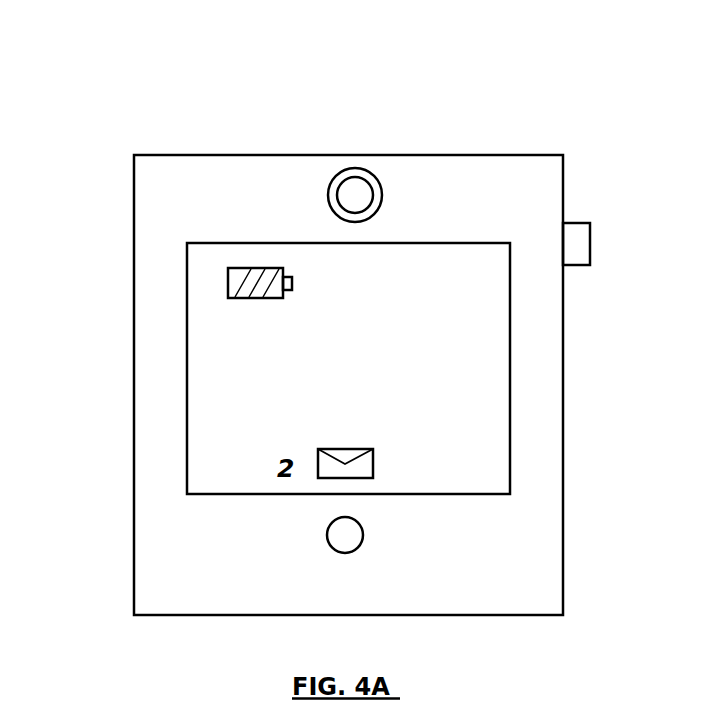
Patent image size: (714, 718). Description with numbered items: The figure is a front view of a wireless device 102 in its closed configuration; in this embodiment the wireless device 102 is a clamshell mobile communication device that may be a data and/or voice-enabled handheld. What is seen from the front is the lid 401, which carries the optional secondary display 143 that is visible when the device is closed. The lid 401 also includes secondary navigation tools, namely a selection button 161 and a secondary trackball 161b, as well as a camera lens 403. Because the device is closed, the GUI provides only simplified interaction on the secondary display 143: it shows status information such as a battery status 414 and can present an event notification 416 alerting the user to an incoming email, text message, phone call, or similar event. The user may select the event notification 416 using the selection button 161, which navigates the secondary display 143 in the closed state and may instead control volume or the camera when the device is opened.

The wireless device 102 is at (528, 79).
The lid 401 is at (242, 182).
The secondary display 143 is at (187, 278).
The camera lens 403 is at (357, 168).
The selection button 161 is at (591, 243).
The battery status 414 is at (292, 288).
The event notification 416 is at (373, 462).
The secondary trackball 161b is at (363, 527).